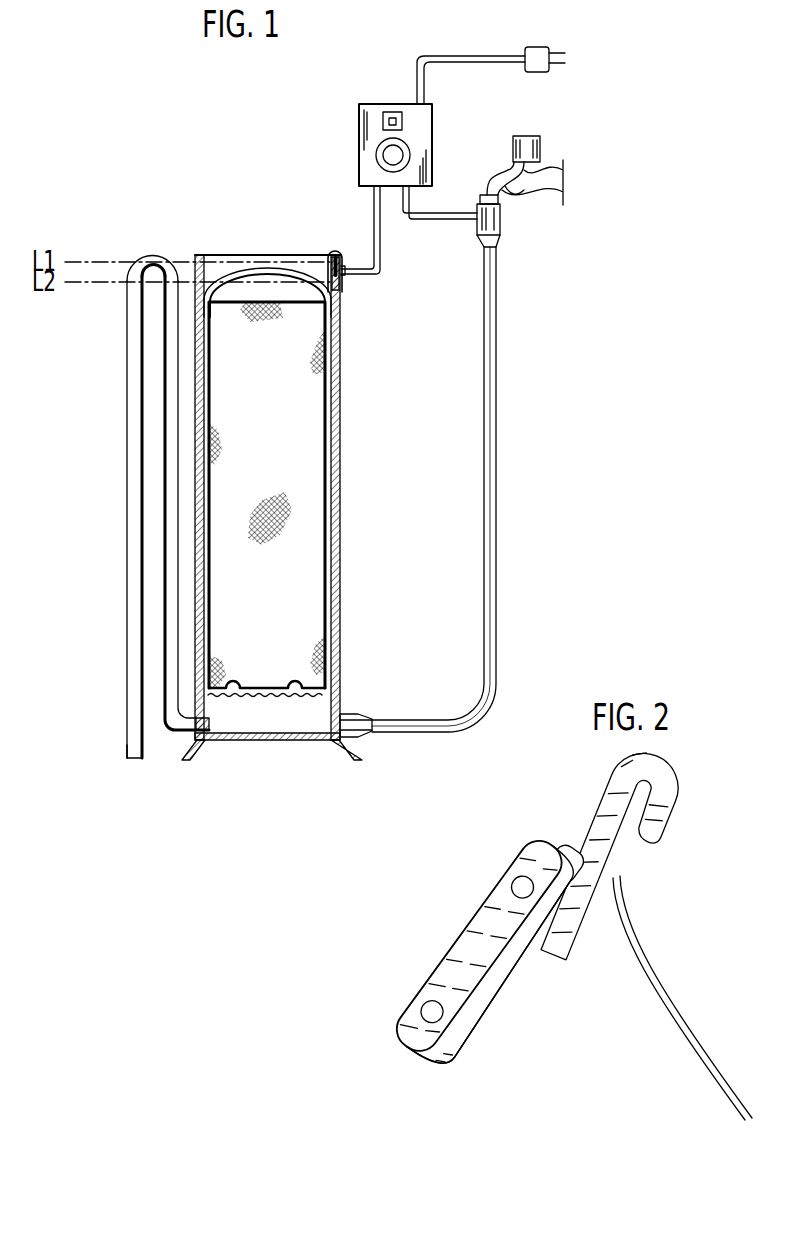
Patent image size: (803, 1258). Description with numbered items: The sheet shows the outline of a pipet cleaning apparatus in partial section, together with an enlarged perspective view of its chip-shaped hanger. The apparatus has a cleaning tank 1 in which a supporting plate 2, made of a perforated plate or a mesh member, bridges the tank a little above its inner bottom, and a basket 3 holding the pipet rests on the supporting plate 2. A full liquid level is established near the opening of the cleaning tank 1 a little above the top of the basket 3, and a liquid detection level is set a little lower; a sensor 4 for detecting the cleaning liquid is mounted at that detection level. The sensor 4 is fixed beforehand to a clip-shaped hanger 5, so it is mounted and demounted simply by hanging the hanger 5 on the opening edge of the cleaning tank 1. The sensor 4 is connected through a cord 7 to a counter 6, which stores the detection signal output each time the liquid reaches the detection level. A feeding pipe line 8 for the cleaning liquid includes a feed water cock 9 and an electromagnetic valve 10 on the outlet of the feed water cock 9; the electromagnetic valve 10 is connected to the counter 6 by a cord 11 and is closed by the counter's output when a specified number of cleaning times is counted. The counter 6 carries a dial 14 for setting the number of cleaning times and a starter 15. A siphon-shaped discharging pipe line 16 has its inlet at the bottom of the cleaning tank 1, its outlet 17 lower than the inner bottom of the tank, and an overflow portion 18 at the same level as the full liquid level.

In FIG. 1, the cleaning tank 1 is at (340, 455).
In FIG. 1, the supporting plate 2 is at (268, 687).
In FIG. 1, the basket 3 is at (327, 400).
In FIG. 1, the sensor 4 is at (330, 262).
In FIG. 2, the sensor 4 is at (466, 944).
In FIG. 1, the clip-shaped hanger 5 is at (337, 250).
In FIG. 2, the clip-shaped hanger 5 is at (636, 843).
In FIG. 1, the counter 6 is at (449, 116).
In FIG. 1, the cord 7 is at (378, 276).
In FIG. 2, the cord 7 is at (652, 970).
In FIG. 1, the feeding pipe line 8 is at (500, 558).
In FIG. 1, the feed water cock 9 is at (522, 136).
In FIG. 1, the electromagnetic valve 10 is at (499, 228).
In FIG. 1, the cord 11 is at (428, 221).
In FIG. 1, the dial 14 is at (403, 153).
In FIG. 1, the starter 15 is at (393, 112).
In FIG. 1, the siphon-shaped discharging pipe line 16 is at (139, 507).
In FIG. 1, the outlet 17 is at (133, 760).
In FIG. 1, the overflow portion 18 is at (152, 256).